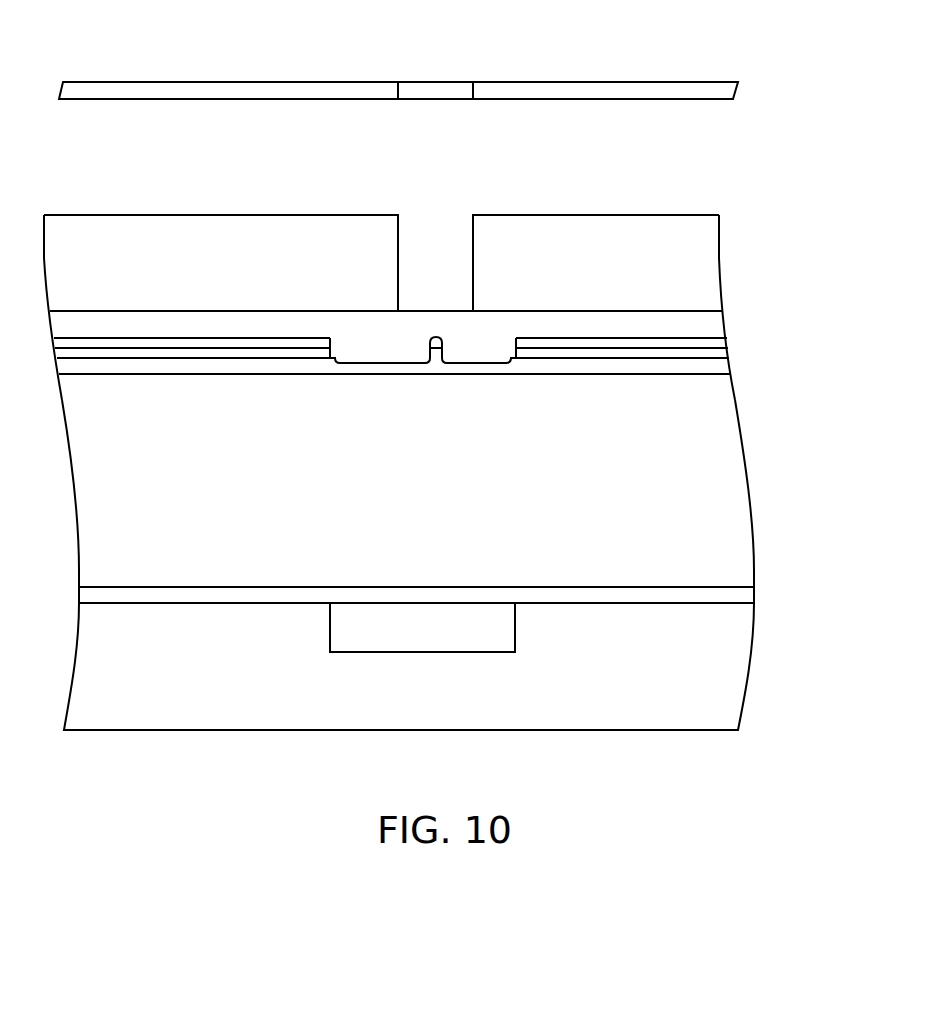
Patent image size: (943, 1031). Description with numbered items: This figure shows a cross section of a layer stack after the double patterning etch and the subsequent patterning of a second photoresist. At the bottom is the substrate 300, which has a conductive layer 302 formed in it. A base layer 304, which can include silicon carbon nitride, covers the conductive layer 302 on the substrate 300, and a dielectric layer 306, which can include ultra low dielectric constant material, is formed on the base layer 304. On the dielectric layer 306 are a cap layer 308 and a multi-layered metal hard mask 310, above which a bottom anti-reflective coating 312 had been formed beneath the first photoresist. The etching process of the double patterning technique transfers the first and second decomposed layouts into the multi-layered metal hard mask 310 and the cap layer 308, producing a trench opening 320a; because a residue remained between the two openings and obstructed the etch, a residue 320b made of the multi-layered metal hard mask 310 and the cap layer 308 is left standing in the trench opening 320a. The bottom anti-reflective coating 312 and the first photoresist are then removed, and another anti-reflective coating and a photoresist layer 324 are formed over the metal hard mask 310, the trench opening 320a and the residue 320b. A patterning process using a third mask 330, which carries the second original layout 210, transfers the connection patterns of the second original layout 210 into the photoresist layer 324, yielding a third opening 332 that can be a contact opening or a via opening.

The second original layout 210 is at (437, 90).
The third mask 330 is at (735, 92).
The third opening 332 is at (435, 205).
The photoresist layer 324 is at (721, 260).
The bottom anti-reflective coating 312 is at (723, 315).
The multi-layered metal hard mask 310 is at (742, 337).
The trench opening 320a is at (432, 305).
The residue 320b is at (438, 337).
The cap layer 308 is at (727, 368).
The dielectric layer 306 is at (746, 497).
The base layer 304 is at (752, 596).
The conductive layer 302 is at (404, 641).
The substrate 300 is at (404, 721).